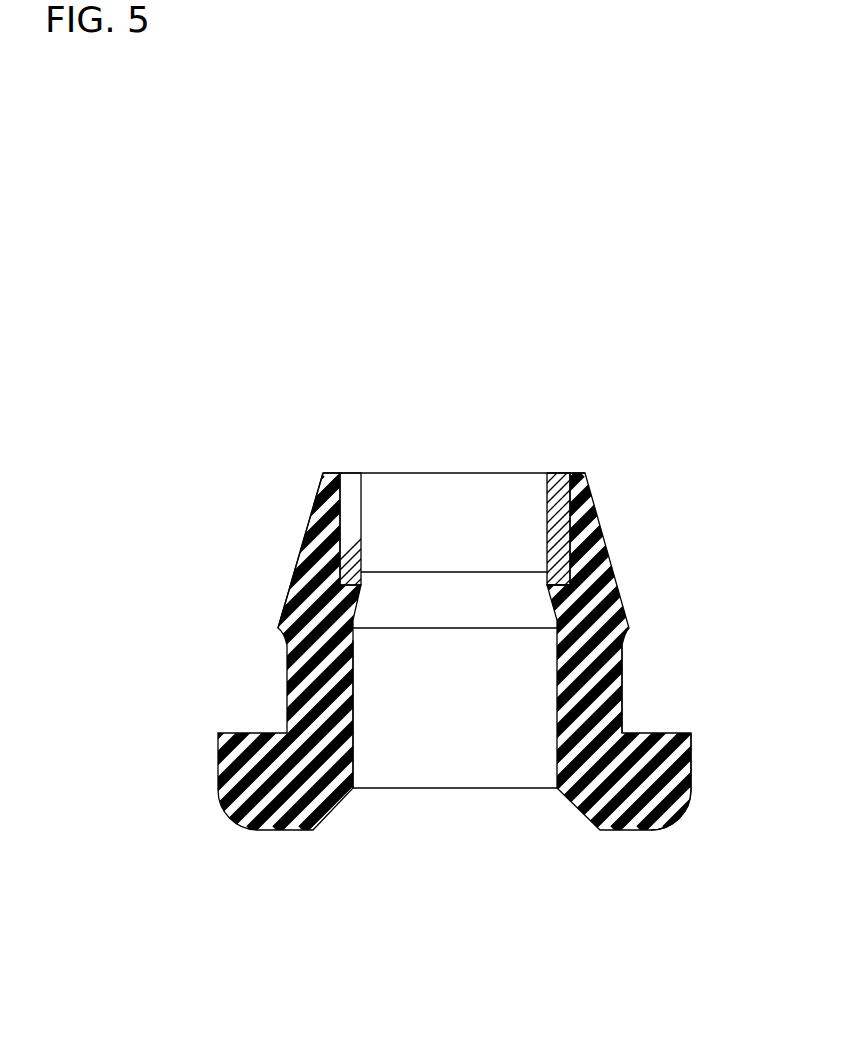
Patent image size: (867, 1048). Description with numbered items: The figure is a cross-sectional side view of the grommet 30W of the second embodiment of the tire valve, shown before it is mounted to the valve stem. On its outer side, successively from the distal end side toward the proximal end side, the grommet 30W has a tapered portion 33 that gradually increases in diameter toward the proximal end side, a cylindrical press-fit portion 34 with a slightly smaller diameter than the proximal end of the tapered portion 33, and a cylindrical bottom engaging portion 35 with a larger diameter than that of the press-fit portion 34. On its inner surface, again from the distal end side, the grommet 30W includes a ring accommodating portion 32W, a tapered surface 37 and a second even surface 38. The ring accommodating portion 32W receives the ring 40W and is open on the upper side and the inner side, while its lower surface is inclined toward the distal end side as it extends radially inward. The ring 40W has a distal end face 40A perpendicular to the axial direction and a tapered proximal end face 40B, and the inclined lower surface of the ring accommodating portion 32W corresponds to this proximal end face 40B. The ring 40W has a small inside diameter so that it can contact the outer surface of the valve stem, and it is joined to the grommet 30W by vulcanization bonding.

The grommet 30W is at (307, 527).
The ring accommodating portion 32W is at (360, 513).
The tapered portion 33 is at (613, 558).
The press-fit portion 34 is at (622, 676).
The bottom engaging portion 35 is at (692, 768).
The tapered surface 37 is at (350, 604).
The second even surface 38 is at (353, 710).
The distal end face 40A is at (558, 473).
The proximal end face 40B is at (553, 588).
The ring 40W is at (565, 503).